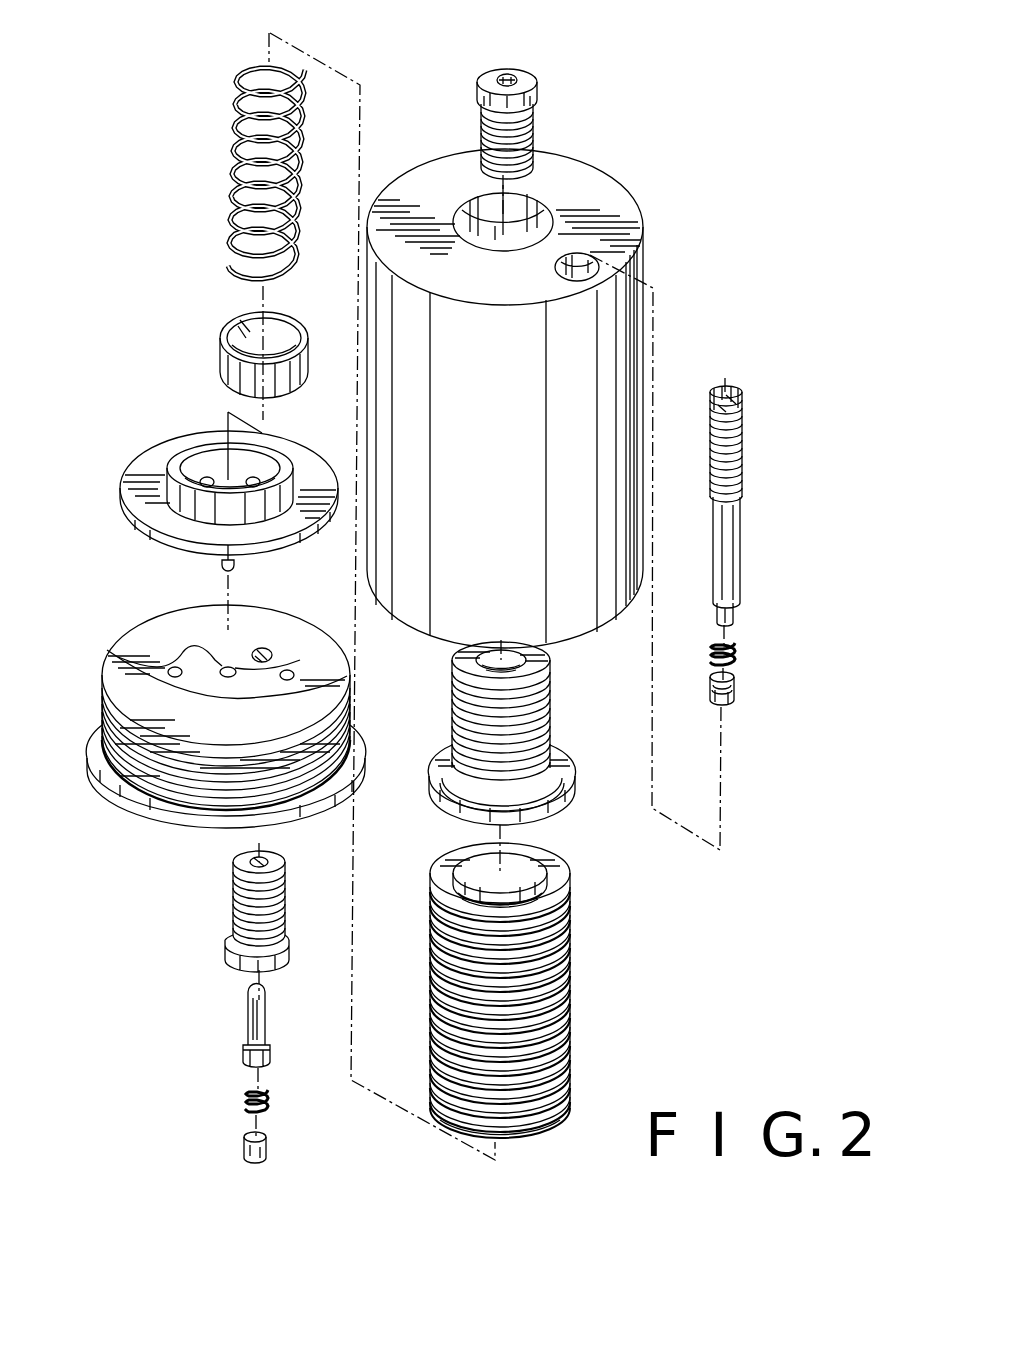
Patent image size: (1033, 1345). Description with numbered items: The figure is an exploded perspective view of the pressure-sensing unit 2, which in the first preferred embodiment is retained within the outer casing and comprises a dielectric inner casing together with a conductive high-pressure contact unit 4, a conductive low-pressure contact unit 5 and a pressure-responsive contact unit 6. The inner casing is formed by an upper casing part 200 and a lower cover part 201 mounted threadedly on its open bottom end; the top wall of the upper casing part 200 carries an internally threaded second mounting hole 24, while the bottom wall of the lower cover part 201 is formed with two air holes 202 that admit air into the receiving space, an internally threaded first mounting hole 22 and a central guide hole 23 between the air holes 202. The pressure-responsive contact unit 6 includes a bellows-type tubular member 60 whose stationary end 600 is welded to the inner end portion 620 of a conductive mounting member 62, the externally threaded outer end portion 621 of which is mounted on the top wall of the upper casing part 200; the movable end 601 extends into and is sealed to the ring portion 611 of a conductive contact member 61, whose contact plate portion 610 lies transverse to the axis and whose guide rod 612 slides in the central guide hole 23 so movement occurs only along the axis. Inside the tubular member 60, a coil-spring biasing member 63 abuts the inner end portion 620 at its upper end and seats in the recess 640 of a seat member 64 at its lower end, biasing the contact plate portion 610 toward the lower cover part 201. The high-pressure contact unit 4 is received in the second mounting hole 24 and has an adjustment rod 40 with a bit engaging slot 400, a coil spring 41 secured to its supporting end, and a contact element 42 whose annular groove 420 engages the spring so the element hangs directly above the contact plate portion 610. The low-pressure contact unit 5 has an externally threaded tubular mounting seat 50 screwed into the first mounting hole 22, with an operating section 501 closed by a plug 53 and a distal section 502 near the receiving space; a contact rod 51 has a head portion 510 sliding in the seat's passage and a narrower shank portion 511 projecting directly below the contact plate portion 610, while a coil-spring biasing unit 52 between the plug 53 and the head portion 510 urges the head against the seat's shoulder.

The pressure-sensing unit 2 is at (580, 106).
The upper casing part 200 is at (627, 197).
The second mounting hole 24 is at (598, 280).
The pressure-responsive contact unit 6 is at (165, 255).
The conductive biasing member 63 is at (236, 205).
The conductive seat member 64 is at (236, 333).
The recess 640 is at (240, 335).
The conductive contact member 61 is at (200, 492).
The ring portion 611 is at (198, 450).
The contact plate portion 610 is at (123, 485).
The guide rod 612 is at (220, 572).
The lower cover part 201 is at (212, 717).
The air holes 202 is at (130, 660).
The central guide hole 23 is at (222, 668).
The first mounting hole 22 is at (263, 650).
The conductive low-pressure contact unit 5 is at (166, 1039).
The tubular mounting seat 50 is at (261, 927).
The distal section 502 is at (280, 862).
The operating section 501 is at (280, 962).
The contact rod 51 is at (209, 1023).
The shank portion 511 is at (250, 1015).
The head portion 510 is at (245, 1045).
The biasing unit 52 is at (268, 1097).
The plug 53 is at (268, 1147).
The conductive mounting member 62 is at (538, 733).
The outer end portion 621 is at (548, 670).
The inner end portion 620 is at (565, 770).
The tubular member 60 is at (543, 990).
The stationary end 600 is at (565, 880).
The movable end 601 is at (556, 1137).
The conductive high-pressure contact unit 4 is at (769, 554).
The adjustment rod 40 is at (761, 475).
The bit engaging slot 400 is at (724, 388).
The coil spring 41 is at (738, 650).
The contact element 42 is at (768, 698).
The annular groove 420 is at (738, 690).